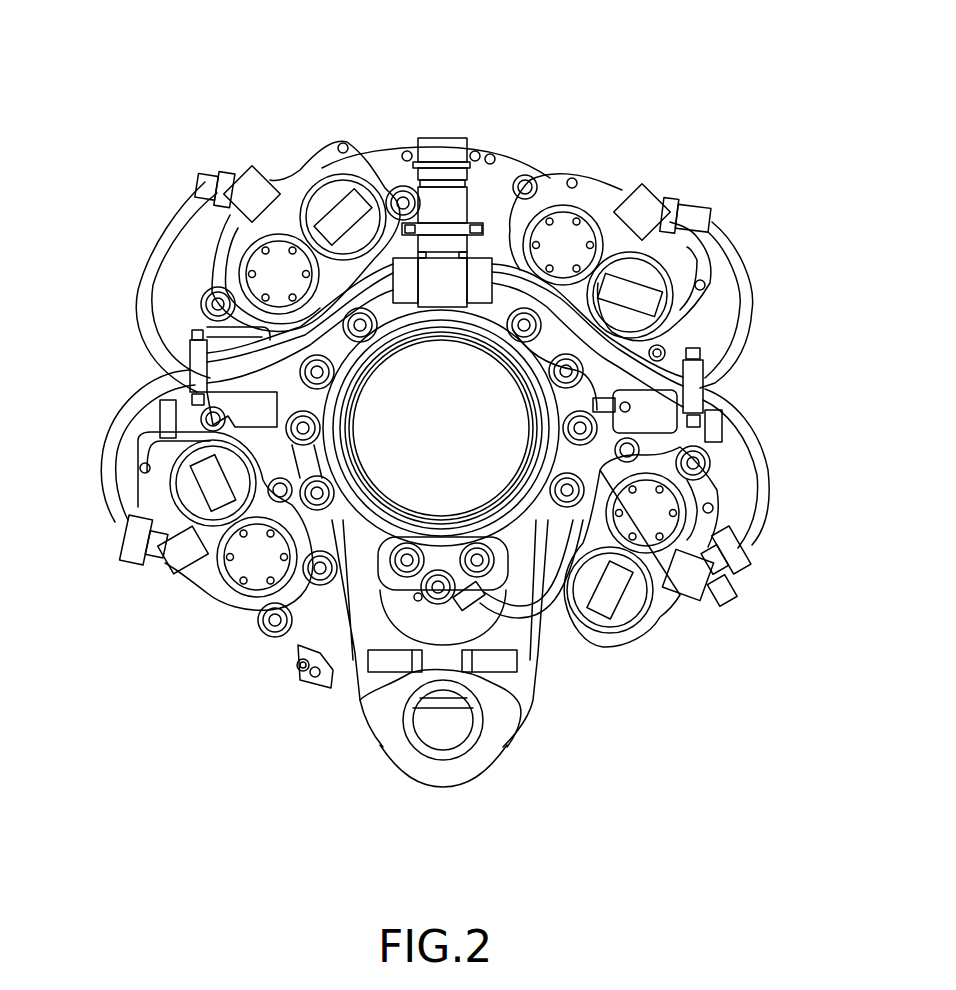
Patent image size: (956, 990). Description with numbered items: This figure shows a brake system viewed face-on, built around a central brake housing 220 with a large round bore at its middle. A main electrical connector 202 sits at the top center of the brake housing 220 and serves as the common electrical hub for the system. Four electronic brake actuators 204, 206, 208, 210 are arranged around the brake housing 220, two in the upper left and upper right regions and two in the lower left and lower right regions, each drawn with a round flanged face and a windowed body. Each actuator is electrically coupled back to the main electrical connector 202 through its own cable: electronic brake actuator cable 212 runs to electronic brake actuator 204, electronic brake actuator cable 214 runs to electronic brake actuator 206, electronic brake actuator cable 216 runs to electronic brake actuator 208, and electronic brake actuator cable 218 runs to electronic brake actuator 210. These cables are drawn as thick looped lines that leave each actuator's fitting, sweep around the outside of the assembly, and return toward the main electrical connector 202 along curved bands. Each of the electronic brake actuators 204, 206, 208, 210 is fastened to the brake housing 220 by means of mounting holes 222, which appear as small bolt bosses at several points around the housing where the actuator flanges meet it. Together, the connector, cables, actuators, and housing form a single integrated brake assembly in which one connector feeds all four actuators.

The main electrical connector 202 is at (441, 137).
The electronic brake actuator 204 is at (598, 178).
The electronic brake actuator 206 is at (660, 618).
The electronic brake actuator 208 is at (215, 603).
The electronic brake actuator 210 is at (300, 172).
The electronic brake actuator cable 212 is at (715, 228).
The electronic brake actuator cable 214 is at (750, 548).
The electronic brake actuator cable 216 is at (120, 535).
The electronic brake actuator cable 218 is at (170, 220).
The brake housing 220 is at (500, 177).
The mounting holes 222 is at (540, 178).